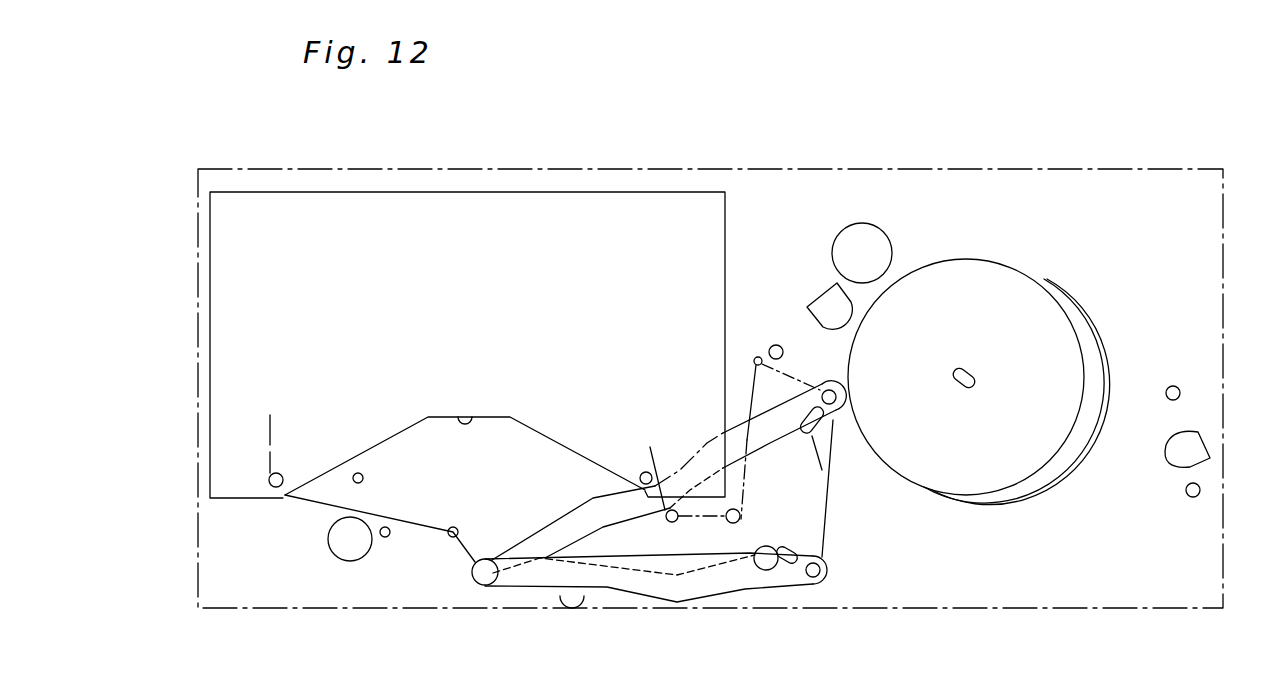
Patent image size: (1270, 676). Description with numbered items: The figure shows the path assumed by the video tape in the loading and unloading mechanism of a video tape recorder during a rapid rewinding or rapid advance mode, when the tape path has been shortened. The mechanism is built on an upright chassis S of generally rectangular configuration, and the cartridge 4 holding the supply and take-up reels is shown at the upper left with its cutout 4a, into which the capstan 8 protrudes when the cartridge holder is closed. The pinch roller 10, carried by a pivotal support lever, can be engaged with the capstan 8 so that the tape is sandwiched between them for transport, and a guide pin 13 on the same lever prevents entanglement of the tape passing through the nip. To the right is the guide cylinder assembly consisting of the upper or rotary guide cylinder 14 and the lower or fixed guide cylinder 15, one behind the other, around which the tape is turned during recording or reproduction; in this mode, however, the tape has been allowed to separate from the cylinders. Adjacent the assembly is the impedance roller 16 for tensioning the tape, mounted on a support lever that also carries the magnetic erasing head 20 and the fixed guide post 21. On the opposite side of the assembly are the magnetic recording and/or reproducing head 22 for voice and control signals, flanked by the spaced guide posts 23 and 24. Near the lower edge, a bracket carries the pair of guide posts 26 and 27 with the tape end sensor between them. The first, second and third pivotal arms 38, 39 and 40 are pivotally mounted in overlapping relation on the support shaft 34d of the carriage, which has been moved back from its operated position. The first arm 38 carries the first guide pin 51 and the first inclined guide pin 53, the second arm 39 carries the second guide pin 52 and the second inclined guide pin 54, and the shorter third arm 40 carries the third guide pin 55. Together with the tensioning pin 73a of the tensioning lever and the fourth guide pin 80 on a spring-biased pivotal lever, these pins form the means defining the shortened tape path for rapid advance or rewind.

The upright chassis S is at (685, 170).
The cartridge 4 is at (378, 212).
The cutout 4a is at (465, 416).
The capstan 8 is at (357, 472).
The pinch roller 10 is at (336, 555).
The guide pin 13 is at (385, 538).
The upper guide cylinder 14 is at (1078, 337).
The lower guide cylinder 15 is at (1112, 350).
The impedance roller 16 is at (865, 228).
The magnetic erasing head 20 is at (828, 300).
The fixed guide post 21 is at (774, 345).
The magnetic recording and/or reproducing head 22 is at (1195, 447).
The guide post 23 is at (1174, 386).
The guide post 24 is at (1193, 497).
The guide post 26 is at (668, 521).
The guide post 27 is at (728, 522).
The support shaft 34d is at (485, 586).
The first pivotal arm 38 is at (690, 476).
The second pivotal arm 39 is at (707, 597).
The third pivotal arm 40 is at (641, 582).
The first guide pin 51 is at (840, 392).
The second guide pin 52 is at (822, 567).
The first inclined guide pin 53 is at (812, 436).
The second inclined guide pin 54 is at (796, 547).
The third guide pin 55 is at (770, 570).
The tensioning pin 73a is at (754, 360).
The fourth guide pin 80 is at (452, 538).